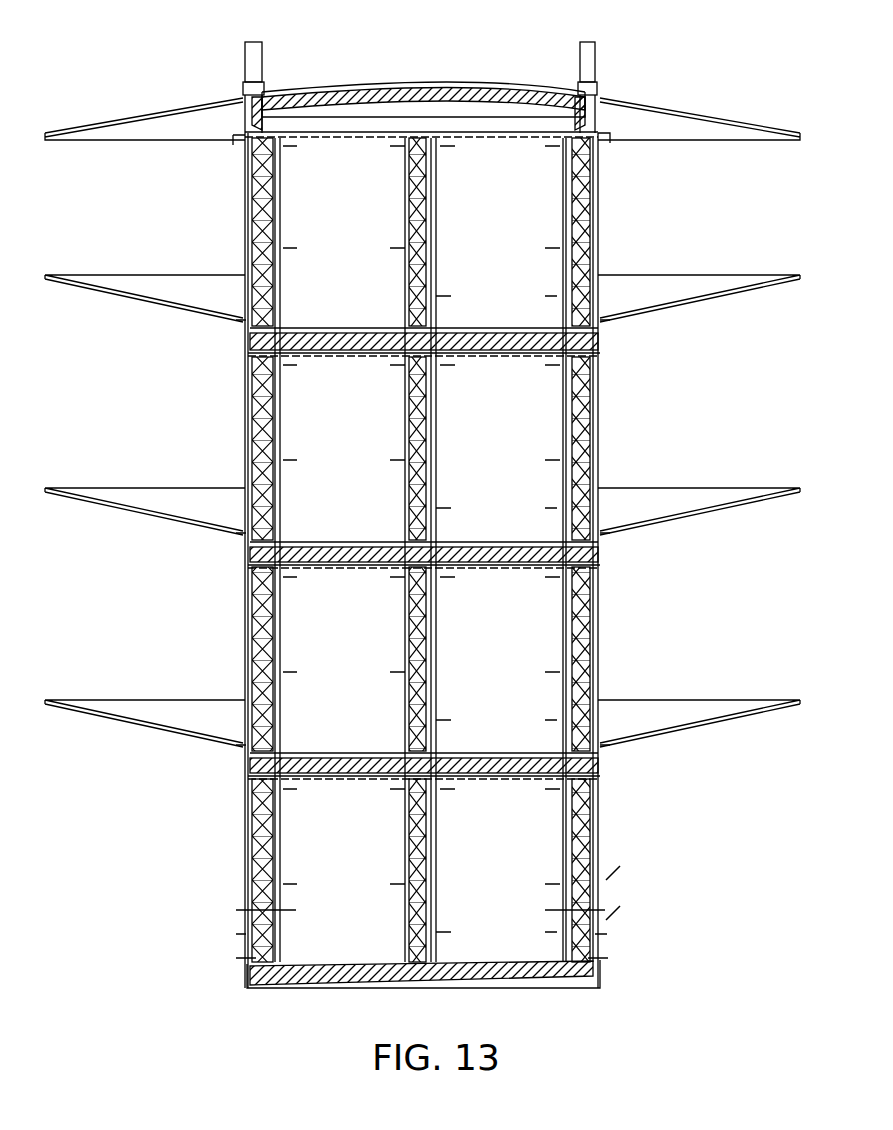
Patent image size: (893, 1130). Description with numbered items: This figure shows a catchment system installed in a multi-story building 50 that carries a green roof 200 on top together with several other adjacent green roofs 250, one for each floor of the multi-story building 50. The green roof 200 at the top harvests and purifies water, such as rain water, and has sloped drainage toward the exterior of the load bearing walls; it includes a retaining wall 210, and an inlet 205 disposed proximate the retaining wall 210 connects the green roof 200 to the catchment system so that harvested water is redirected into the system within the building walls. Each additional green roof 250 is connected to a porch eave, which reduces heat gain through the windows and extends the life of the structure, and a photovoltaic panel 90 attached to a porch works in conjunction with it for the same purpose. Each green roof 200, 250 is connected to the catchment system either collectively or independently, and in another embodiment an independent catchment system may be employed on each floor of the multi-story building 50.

The multi-story building 50 is at (205, 194).
The photovoltaic panel 90 is at (107, 122).
The green roof 200 is at (383, 90).
The inlet 205 is at (573, 96).
The retaining wall 210 is at (245, 50).
The adjacent green roof 250 is at (88, 275).